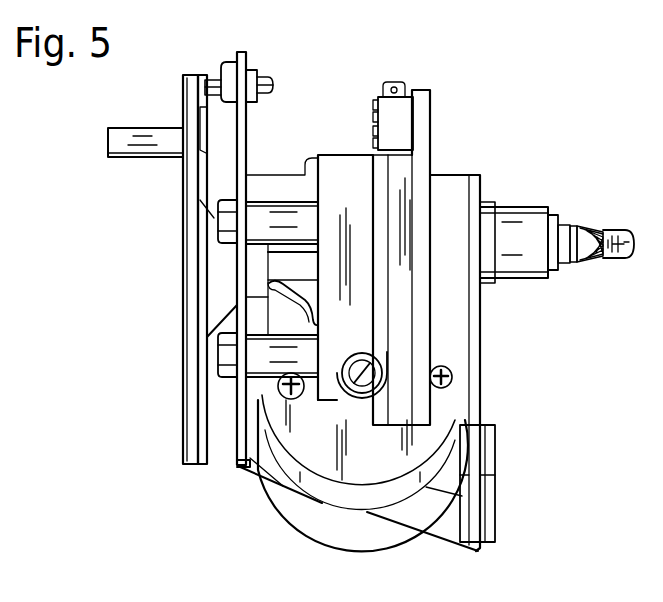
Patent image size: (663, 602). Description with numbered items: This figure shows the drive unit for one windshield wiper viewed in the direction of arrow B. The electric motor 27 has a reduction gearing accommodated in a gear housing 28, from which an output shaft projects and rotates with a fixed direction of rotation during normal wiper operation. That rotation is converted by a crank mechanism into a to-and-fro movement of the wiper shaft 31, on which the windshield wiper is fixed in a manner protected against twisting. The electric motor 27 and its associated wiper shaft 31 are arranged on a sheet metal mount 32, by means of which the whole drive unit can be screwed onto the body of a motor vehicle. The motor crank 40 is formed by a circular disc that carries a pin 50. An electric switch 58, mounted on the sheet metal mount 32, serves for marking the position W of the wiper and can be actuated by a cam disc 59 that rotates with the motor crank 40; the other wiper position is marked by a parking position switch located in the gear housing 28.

The electric motor 27 is at (338, 470).
The gear housing 28 is at (340, 170).
The wiper shaft 31 is at (611, 234).
The sheet metal mount 32 is at (477, 382).
The motor crank 40 is at (190, 300).
The pin 50 is at (142, 129).
The electric switch 58 is at (227, 66).
The cam disc 59 is at (202, 267).